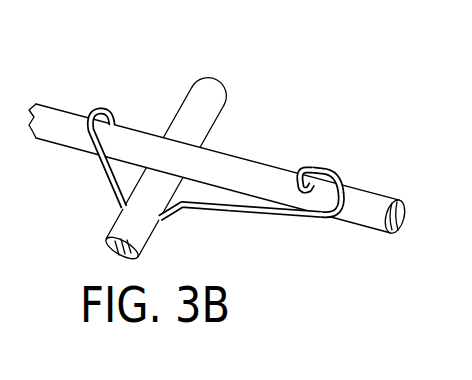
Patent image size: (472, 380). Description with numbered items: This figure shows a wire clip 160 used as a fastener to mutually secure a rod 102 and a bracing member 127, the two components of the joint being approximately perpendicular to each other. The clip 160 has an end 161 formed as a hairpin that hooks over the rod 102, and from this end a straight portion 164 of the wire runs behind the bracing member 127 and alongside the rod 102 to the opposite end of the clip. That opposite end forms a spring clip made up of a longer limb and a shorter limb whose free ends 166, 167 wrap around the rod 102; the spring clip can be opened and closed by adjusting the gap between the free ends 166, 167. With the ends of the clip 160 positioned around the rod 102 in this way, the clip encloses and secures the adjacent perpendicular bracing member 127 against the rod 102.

The rod 102 is at (367, 210).
The bracing member 127 is at (228, 103).
The clip 160 is at (232, 169).
The end 161 is at (98, 107).
The straight portion 164 is at (272, 214).
The free end 166 is at (305, 168).
The free end 167 is at (343, 184).